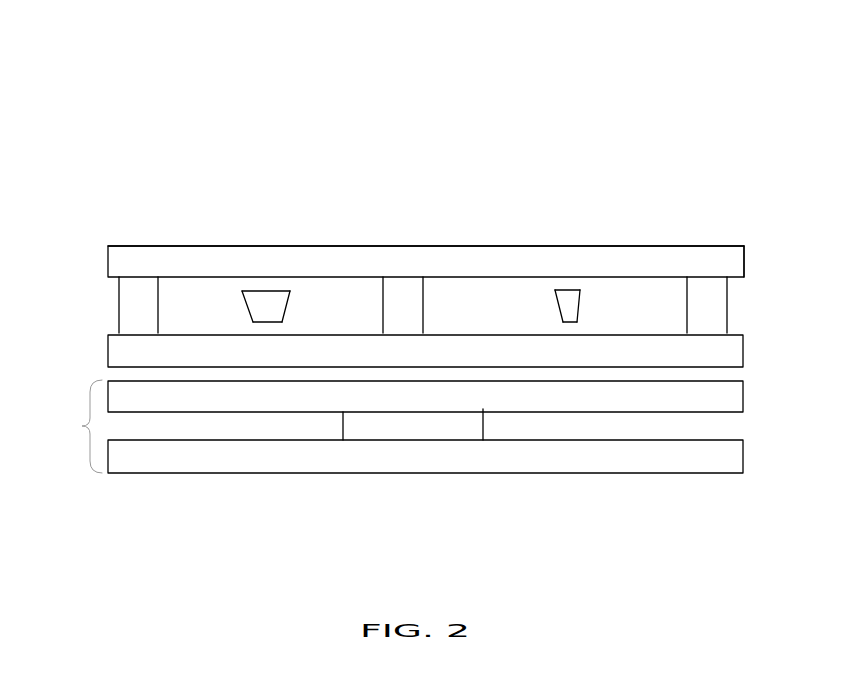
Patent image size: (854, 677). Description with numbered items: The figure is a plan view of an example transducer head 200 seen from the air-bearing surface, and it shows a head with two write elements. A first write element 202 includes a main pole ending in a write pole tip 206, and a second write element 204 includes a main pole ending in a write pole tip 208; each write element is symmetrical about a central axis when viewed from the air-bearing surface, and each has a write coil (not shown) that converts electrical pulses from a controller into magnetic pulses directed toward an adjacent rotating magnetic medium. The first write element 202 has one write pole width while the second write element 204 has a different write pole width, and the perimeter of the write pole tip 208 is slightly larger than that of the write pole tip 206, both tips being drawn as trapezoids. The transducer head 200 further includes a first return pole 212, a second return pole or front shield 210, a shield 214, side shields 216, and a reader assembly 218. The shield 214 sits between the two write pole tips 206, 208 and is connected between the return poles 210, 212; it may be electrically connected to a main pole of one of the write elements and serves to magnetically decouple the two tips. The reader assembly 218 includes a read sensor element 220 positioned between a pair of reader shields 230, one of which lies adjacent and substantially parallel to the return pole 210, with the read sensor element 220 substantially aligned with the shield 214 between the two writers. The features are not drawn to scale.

The transducer head 200 is at (161, 55).
The first write element 202 is at (209, 228).
The second write element 204 is at (564, 225).
The write pole tip 206 is at (261, 268).
The write pole tip 208 is at (560, 279).
The second return pole 210 is at (132, 356).
The first return pole 212 is at (720, 258).
The shield 214 is at (403, 290).
The side shields 216 is at (139, 287).
The reader assembly 218 is at (414, 448).
The read sensor element 220 is at (417, 423).
The reader shields 230 is at (722, 394).